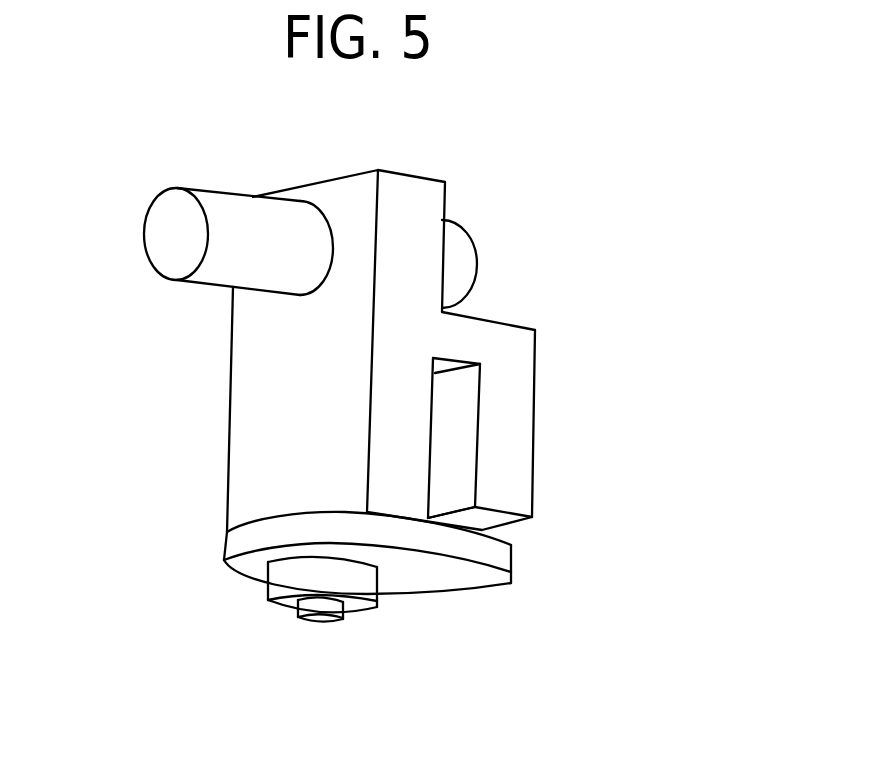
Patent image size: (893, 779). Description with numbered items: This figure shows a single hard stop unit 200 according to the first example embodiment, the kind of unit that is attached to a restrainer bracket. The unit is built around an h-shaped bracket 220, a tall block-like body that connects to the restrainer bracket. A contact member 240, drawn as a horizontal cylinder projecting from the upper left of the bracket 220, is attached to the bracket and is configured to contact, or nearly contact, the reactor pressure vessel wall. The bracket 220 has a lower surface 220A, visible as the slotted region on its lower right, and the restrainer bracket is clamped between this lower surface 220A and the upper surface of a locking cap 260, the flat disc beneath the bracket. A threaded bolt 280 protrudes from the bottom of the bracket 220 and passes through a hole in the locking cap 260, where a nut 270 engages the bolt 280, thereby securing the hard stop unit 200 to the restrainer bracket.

The hard stop unit 200 is at (547, 233).
The h-shaped bracket 220 is at (245, 407).
The lower surface of the h-shaped bracket 220A is at (438, 365).
The contact member 240 is at (162, 236).
The locking cap 260 is at (502, 555).
The nut 270 is at (278, 577).
The threaded bolt 280 is at (318, 618).